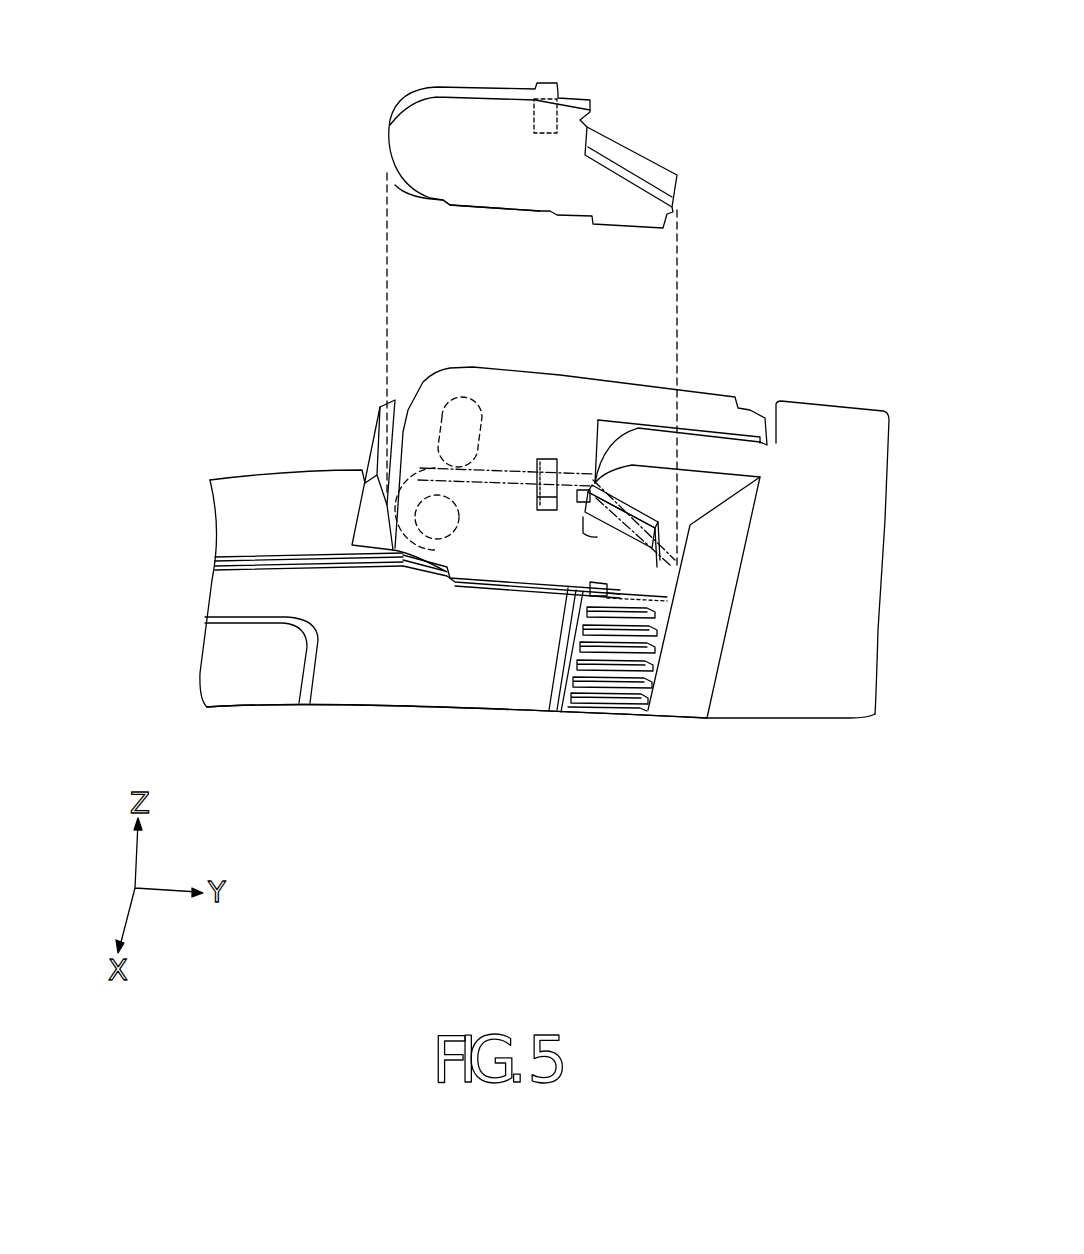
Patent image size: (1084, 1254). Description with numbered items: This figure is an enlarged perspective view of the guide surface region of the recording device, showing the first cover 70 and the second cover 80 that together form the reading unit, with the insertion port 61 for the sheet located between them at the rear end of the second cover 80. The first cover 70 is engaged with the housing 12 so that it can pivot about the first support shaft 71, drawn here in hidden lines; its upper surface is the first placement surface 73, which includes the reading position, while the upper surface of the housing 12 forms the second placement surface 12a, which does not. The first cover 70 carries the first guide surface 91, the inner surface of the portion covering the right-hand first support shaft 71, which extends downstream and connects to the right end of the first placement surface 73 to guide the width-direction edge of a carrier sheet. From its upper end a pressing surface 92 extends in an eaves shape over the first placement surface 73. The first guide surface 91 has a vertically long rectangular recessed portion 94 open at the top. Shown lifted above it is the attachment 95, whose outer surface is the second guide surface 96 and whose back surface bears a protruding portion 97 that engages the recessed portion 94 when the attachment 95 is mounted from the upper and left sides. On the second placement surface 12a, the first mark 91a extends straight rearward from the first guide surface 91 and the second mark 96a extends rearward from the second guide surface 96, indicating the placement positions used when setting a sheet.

The housing 12 is at (278, 473).
The second placement surface 12a is at (435, 688).
The insertion port 61 is at (638, 683).
The first cover 70 is at (632, 397).
The first support shaft 71 is at (438, 400).
The first placement surface 73 is at (663, 642).
The second cover 80 is at (835, 423).
The first guide surface 91 is at (467, 550).
The first mark 91a is at (327, 556).
The pressing surface 92 is at (585, 535).
The recessed portion 94 is at (548, 512).
The attachment 95 is at (497, 86).
The second guide surface 96 is at (472, 200).
The second mark 96a is at (325, 568).
The protruding portion 97 is at (540, 135).